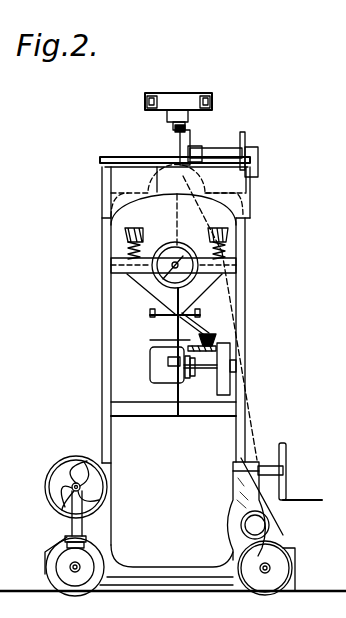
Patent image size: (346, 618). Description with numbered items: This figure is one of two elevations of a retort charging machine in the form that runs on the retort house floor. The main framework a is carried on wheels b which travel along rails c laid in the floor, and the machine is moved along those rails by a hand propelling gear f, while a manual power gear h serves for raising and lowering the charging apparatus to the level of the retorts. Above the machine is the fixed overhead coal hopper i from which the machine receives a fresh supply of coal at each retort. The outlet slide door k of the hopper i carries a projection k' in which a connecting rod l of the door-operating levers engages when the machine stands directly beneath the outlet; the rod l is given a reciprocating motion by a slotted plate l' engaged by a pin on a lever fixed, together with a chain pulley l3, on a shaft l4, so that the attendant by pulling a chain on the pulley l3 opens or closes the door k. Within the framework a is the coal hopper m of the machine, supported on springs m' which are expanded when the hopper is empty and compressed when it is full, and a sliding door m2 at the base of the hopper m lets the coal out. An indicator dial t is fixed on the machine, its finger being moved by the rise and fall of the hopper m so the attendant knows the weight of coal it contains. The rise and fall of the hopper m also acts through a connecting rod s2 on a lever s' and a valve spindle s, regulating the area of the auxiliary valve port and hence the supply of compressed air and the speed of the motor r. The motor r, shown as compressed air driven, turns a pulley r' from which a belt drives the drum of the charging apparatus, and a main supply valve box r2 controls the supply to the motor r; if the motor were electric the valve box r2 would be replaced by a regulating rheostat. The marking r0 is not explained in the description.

The main framework a is at (168, 371).
The wheels b is at (290, 568).
The rails c is at (77, 590).
The hand propelling gear f is at (70, 460).
The manual power gear h is at (57, 568).
The fixed overhead coal hopper i is at (178, 92).
The outlet slide door k is at (141, 110).
The projection k' is at (201, 110).
The connecting rod l is at (165, 134).
The slotted plate l' is at (174, 147).
The chain pulley l3 is at (248, 143).
The shaft l4 is at (222, 153).
The coal hopper m is at (162, 215).
The springs m' is at (176, 243).
The sliding door m2 is at (160, 322).
The indicator dial t is at (175, 265).
The valve spindle s is at (225, 338).
The lever s' is at (183, 322).
The connecting rod s2 is at (177, 300).
The motor r is at (167, 365).
The pulley r' is at (210, 369).
The main supply valve box r2 is at (150, 341).
The shaft lower end r0 is at (172, 394).